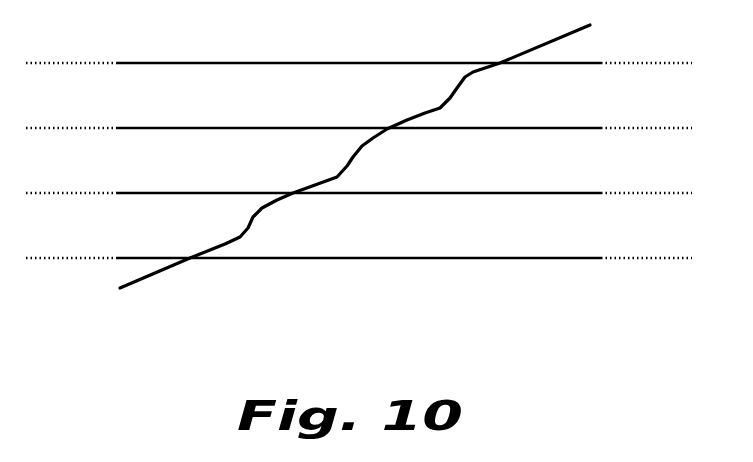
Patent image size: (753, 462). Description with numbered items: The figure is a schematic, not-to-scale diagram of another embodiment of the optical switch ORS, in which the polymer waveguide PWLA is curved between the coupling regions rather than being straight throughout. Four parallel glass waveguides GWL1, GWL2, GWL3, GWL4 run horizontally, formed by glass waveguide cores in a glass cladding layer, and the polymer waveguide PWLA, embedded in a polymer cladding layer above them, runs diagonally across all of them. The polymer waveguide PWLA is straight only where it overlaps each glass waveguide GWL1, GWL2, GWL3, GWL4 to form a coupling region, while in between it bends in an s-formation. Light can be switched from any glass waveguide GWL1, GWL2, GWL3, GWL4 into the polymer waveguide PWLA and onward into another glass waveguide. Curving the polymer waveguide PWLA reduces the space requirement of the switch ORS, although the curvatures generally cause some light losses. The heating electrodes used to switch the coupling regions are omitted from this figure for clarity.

The switch ORS is at (260, 48).
The glass waveguide GWL1 is at (340, 258).
The glass waveguide GWL2 is at (392, 193).
The glass waveguide GWL3 is at (457, 128).
The glass waveguide GWL4 is at (537, 63).
The polymer waveguide PWLA is at (143, 285).